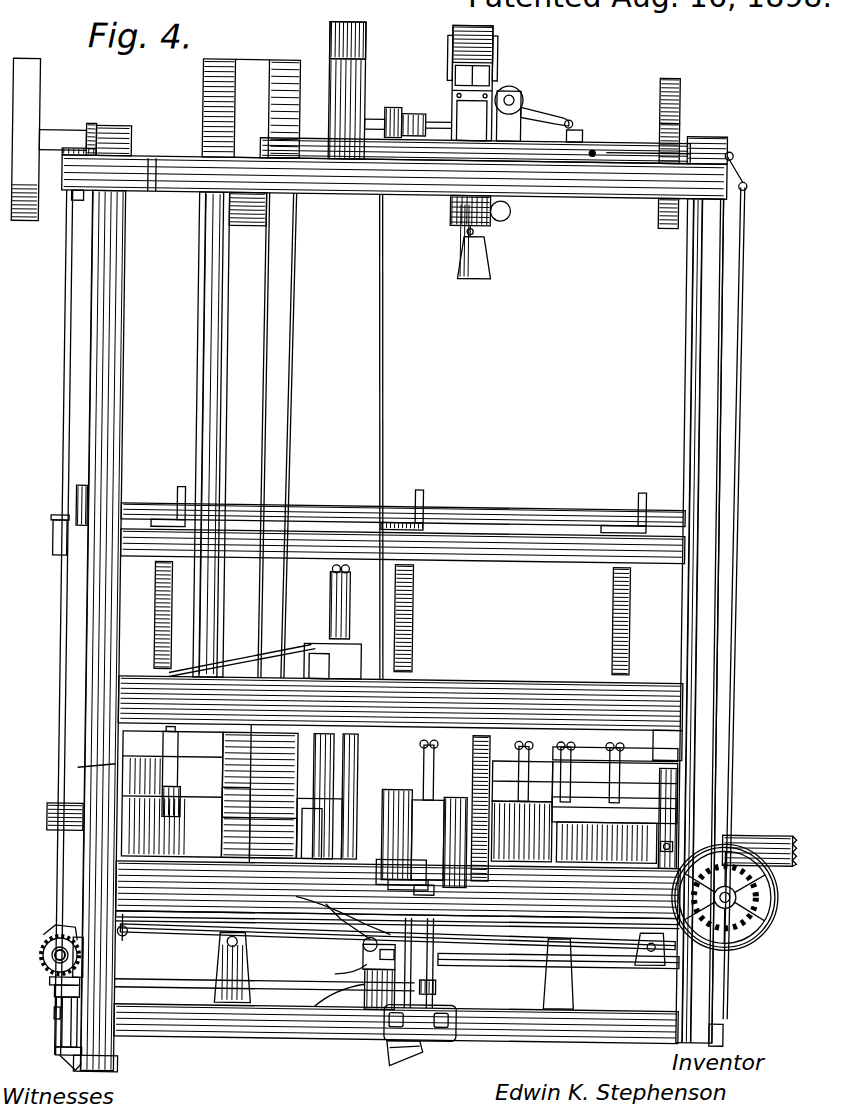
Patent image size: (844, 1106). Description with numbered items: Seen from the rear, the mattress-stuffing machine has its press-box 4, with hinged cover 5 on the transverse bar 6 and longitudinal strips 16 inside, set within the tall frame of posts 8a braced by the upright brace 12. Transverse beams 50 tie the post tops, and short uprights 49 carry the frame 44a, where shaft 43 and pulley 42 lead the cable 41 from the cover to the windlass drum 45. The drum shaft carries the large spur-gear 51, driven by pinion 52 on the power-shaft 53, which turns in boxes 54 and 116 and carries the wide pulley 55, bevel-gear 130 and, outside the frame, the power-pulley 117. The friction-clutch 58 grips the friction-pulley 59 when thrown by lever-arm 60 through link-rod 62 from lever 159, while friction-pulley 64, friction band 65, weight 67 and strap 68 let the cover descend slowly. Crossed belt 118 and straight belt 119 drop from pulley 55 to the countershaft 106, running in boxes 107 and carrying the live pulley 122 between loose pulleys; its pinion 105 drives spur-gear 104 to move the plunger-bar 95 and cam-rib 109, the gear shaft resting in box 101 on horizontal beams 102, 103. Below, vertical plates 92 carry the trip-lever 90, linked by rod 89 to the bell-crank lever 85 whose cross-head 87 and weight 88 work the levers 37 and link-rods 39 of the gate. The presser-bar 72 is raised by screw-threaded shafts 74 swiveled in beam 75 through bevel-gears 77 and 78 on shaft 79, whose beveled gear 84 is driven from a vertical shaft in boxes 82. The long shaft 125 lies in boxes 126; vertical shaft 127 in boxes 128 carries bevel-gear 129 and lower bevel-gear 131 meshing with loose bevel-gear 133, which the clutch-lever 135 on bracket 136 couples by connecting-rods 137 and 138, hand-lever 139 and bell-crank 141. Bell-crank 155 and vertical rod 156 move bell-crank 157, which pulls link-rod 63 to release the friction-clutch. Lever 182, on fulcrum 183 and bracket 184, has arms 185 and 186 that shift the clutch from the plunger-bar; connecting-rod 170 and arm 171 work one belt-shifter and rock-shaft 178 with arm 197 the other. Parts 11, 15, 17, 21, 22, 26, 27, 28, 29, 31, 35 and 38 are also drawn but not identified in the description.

The press-box 4 is at (540, 800).
The top or cover 5 is at (640, 766).
The transverse bar 6 is at (645, 800).
The posts 8a is at (401, 634).
The clamp block 11 is at (580, 758).
The upright brace 12 is at (326, 738).
The slide box 15 is at (175, 818).
The longitudinal ribs or strips 16 is at (185, 800).
The post 17 is at (180, 740).
The rack 21 is at (480, 745).
The beam end 22 is at (670, 756).
The end block 26 is at (680, 818).
The rack bar 27 is at (752, 845).
The gear 28 is at (765, 930).
The spokes 29 is at (760, 884).
The rim 31 is at (770, 908).
The pin 35 is at (677, 843).
The levers 37 is at (496, 965).
The lever 38 is at (220, 940).
The link-rods 39 is at (656, 950).
The cable 41 is at (392, 436).
The roll or pulley 42 is at (388, 108).
The shaft 43 is at (370, 119).
The frame 44a is at (508, 30).
The drum 45 is at (410, 114).
The short uprights 49 is at (347, 90).
The horizontal beams 50 is at (394, 177).
The large spur-gear 51 is at (674, 92).
The small pinion 52 is at (676, 124).
The power-shaft 53 is at (625, 150).
The boxes 54 is at (720, 135).
The wide pulley 55 is at (245, 63).
The friction-clutch 58 is at (545, 116).
The friction-pulley 59 is at (514, 95).
The lever-arm 60 is at (587, 148).
The link-rod 62 is at (445, 155).
The link-rod 63 is at (728, 154).
The friction-pulley 64 is at (447, 218).
The friction band or strap 65 is at (460, 233).
The weight 67 is at (484, 260).
The strap 68 is at (470, 27).
The presser-bar 72 is at (400, 703).
The screw-threaded shafts 74 is at (414, 640).
The horizontal transverse beam 75 is at (403, 548).
The bevel-gears 77 is at (396, 522).
The bevel-gears 78 is at (401, 502).
The shaft 79 is at (403, 503).
The boxes 82 is at (58, 561).
The beveled gear 84 is at (75, 500).
The bell-crank or elbow lever 85 is at (392, 1042).
The cross-head 87 is at (383, 952).
The weight 88 is at (354, 998).
The rod 89 is at (404, 1063).
The trip-lever 90 is at (441, 972).
The vertical plates 92 is at (425, 920).
The plunger-bar 95 is at (403, 860).
The box 101 is at (455, 800).
The horizontal beam 102 is at (440, 840).
The horizontal beam 103 is at (319, 828).
The large spur-gear 104 is at (530, 745).
The pinion 105 is at (521, 831).
The shaft 106 is at (416, 800).
The boxes 107 is at (295, 822).
The cam-rib 109 is at (439, 890).
The box 116 is at (126, 140).
The power-pulley 117 is at (24, 66).
The crossed belt 118 is at (291, 436).
The straight belt 119 is at (191, 434).
The live pulley 122 is at (237, 807).
The long horizontal shaft 125 is at (48, 962).
The boxes 126 is at (56, 985).
The vertical shaft 127 is at (36, 622).
The boxes 128 is at (68, 203).
The bevel-gear 129 is at (60, 162).
The bevel-gear 130 is at (87, 127).
The bevel-gear 131 is at (50, 937).
The bevel-gear 133 is at (47, 950).
The clutch-lever 135 is at (62, 1020).
The bracket 136 is at (60, 996).
The connecting-rod 137 is at (60, 1030).
The connecting-rod 138 is at (66, 1058).
The hand-lever 139 is at (80, 772).
The bell-crank 141 is at (96, 1076).
The bell-crank 155 is at (730, 1035).
The vertical rod 156 is at (724, 418).
The bell-crank 157 is at (741, 186).
The lever 159 is at (146, 196).
The connecting-rod 170 is at (235, 967).
The arm 171 is at (348, 925).
The rock-shaft 178 is at (360, 740).
The lever 182 is at (168, 1035).
The fulcrum 183 is at (285, 895).
The bracket 184 is at (365, 910).
The horizontal arm 185 is at (170, 1008).
The horizontal arm 186 is at (259, 793).
The arm 197 is at (325, 660).